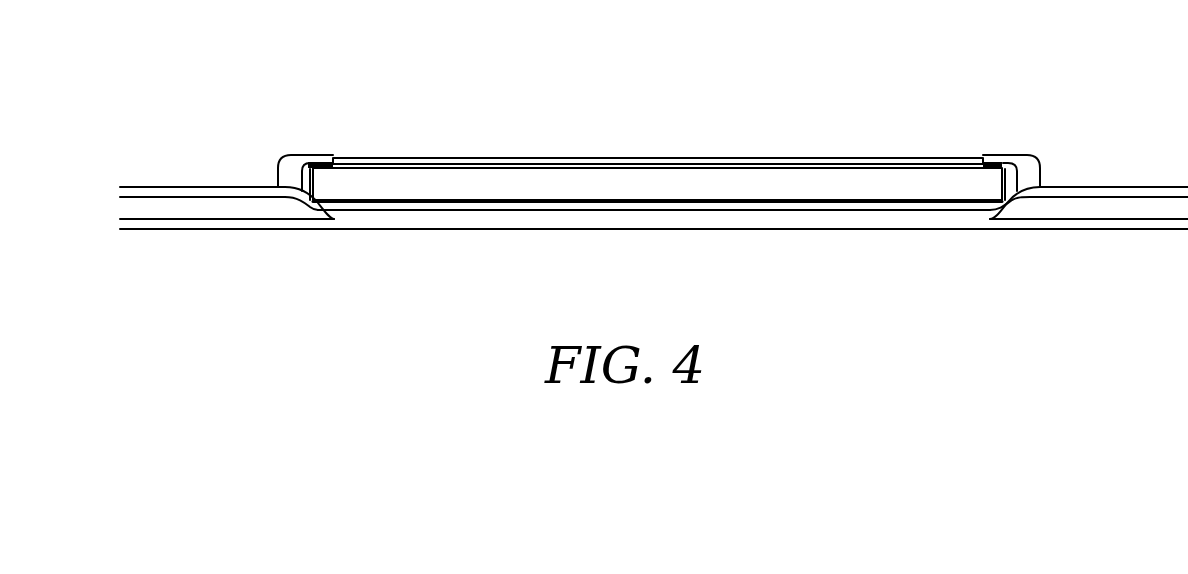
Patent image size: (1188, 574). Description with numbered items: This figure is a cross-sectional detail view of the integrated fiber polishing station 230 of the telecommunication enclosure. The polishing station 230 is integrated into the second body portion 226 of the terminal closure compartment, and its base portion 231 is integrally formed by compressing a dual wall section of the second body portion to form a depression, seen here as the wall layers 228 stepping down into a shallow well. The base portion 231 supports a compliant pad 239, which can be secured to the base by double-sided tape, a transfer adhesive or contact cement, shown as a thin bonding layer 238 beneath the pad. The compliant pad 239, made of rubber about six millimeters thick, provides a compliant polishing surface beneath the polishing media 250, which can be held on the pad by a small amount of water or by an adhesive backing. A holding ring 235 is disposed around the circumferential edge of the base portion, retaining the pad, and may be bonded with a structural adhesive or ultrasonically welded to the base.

The fiber polishing station 230 is at (947, 78).
The housing wall 228 is at (200, 212).
The second body portion 226 is at (407, 230).
The base portion 231 is at (652, 220).
The adhesive/bonding layer 238 is at (847, 205).
The compliant pad 239 is at (798, 177).
The polishing media 250 is at (470, 162).
The holding ring 235 is at (303, 153).